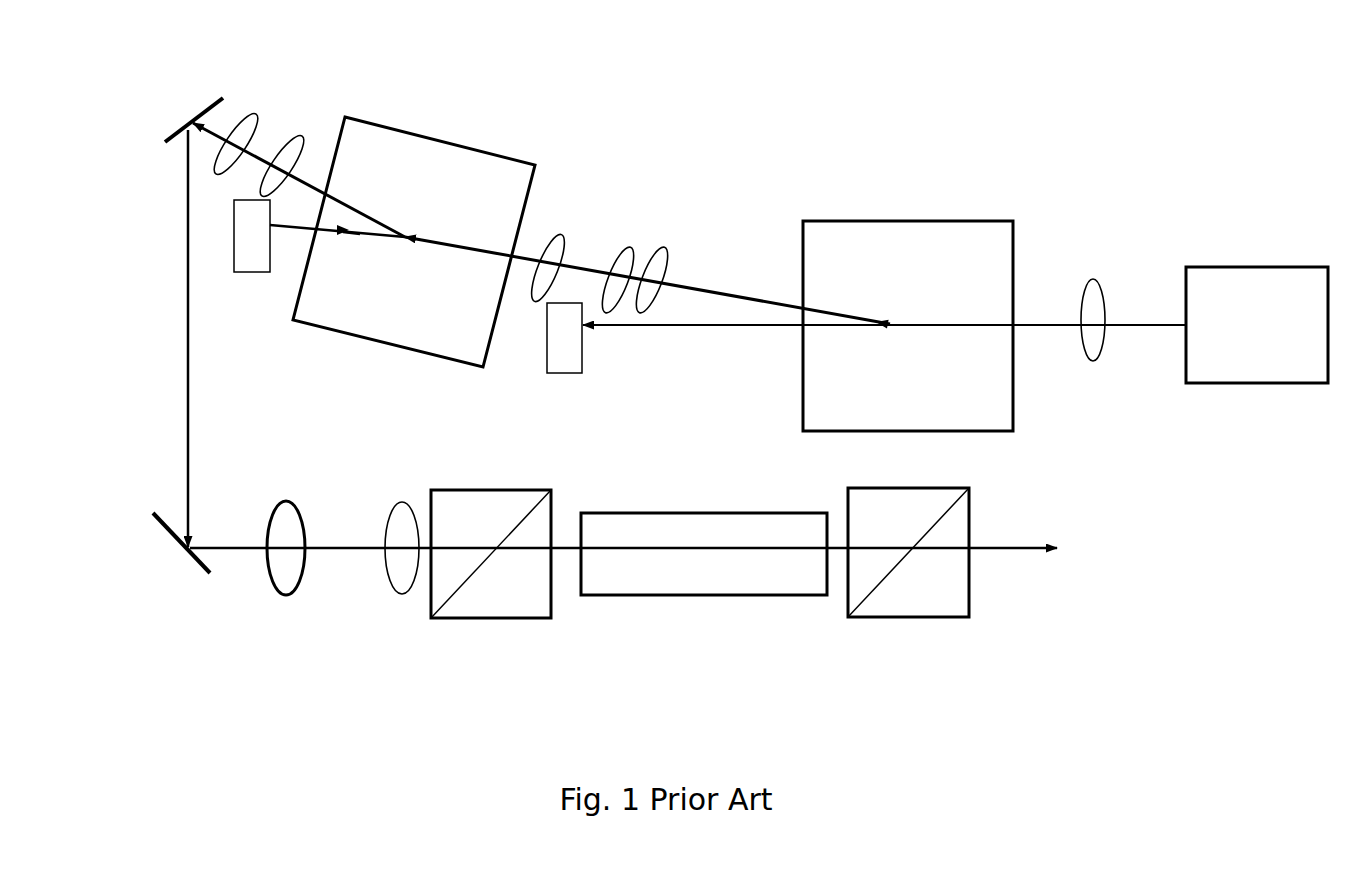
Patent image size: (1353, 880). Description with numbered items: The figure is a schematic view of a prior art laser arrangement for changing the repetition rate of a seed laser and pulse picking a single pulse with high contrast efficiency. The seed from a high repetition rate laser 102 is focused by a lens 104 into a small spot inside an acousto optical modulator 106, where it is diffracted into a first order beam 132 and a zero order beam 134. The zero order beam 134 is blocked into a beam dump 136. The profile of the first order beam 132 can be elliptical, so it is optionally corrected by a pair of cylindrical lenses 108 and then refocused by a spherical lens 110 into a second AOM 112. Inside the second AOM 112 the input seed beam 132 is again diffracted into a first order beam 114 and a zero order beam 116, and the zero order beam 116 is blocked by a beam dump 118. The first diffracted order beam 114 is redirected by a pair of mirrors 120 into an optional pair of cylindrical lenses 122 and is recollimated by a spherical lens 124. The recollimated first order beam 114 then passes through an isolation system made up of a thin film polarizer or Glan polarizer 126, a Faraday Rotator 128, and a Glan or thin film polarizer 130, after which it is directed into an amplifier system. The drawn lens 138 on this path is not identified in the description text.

The high repetition rate laser 102 is at (1257, 325).
The lens 104 is at (1093, 278).
The acousto optical modulator 106 is at (908, 326).
The pair of cylindrical lenses 108 is at (630, 243).
The spherical lens 110 is at (560, 240).
The second AOM 112 is at (414, 242).
The first order beam 114 is at (305, 172).
The zero order beam 116 is at (343, 232).
The beam dump 118 is at (319, 236).
The pair of mirrors 120 is at (177, 143).
The pair of cylindrical lenses 122 is at (260, 108).
The spherical lens 124 is at (280, 597).
The thin film polarizer or Glan polarizer 126 is at (491, 554).
The Faraday Rotator 128 is at (704, 554).
The Glan or thin film polarizer 130 is at (908, 552).
The first order beam 132 is at (768, 298).
The zero order beam 134 is at (735, 330).
The beam dump 136 is at (564, 338).
The lens 138 is at (407, 597).